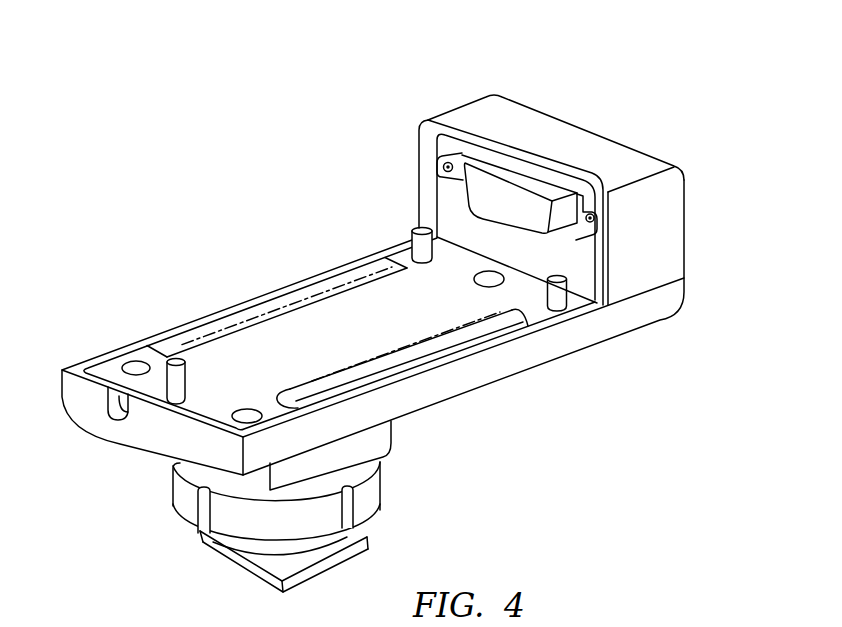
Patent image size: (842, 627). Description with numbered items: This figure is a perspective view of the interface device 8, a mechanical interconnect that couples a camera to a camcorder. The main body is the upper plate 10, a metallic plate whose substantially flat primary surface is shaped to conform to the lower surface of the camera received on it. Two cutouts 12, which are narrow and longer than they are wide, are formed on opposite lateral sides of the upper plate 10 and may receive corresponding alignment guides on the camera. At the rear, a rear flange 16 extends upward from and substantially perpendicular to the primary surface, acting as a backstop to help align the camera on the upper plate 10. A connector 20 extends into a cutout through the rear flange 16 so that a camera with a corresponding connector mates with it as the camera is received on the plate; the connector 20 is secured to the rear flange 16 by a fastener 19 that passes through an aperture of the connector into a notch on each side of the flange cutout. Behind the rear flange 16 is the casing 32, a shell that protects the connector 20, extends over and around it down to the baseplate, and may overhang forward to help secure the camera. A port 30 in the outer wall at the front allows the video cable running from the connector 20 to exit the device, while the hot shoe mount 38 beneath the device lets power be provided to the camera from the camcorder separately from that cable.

The interface device 8 is at (206, 168).
The upper plate 10 is at (370, 307).
The cutouts 12 is at (268, 318).
The rear flange 16 is at (588, 257).
The fastener 19 is at (442, 167).
The connector 20 is at (502, 173).
The port 30 is at (123, 403).
The casing 32 is at (572, 128).
The hot shoe mount 38 is at (335, 560).